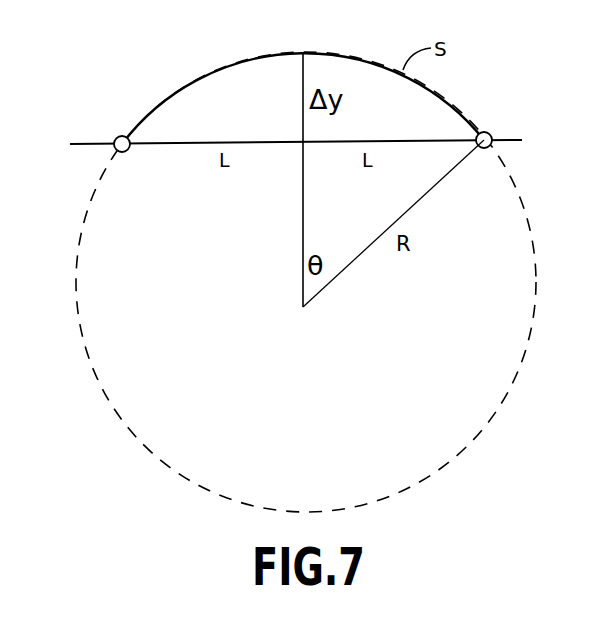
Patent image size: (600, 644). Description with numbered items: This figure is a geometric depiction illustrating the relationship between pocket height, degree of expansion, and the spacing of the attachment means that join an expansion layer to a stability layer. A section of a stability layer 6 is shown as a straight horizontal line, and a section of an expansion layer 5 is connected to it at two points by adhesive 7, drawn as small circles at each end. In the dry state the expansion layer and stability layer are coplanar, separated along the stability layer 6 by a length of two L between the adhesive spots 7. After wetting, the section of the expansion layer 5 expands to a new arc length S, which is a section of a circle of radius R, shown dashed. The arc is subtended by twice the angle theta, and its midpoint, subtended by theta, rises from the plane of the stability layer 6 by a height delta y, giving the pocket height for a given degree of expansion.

The expansion layer 5 is at (207, 72).
The stability layer 6 is at (82, 146).
The adhesive 7 is at (117, 134).